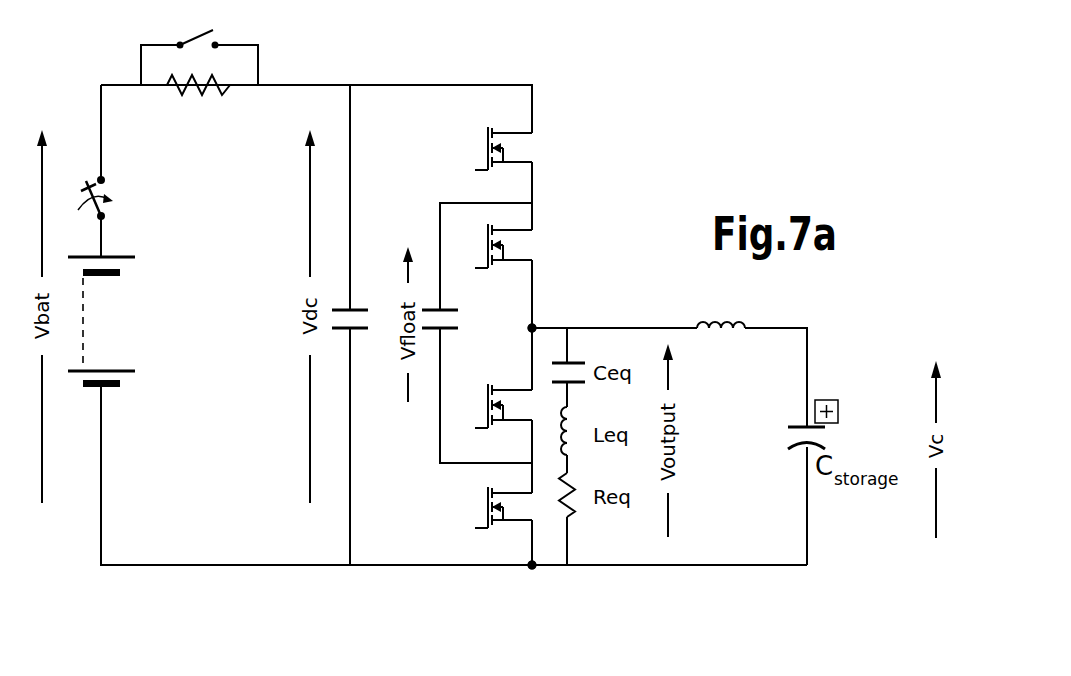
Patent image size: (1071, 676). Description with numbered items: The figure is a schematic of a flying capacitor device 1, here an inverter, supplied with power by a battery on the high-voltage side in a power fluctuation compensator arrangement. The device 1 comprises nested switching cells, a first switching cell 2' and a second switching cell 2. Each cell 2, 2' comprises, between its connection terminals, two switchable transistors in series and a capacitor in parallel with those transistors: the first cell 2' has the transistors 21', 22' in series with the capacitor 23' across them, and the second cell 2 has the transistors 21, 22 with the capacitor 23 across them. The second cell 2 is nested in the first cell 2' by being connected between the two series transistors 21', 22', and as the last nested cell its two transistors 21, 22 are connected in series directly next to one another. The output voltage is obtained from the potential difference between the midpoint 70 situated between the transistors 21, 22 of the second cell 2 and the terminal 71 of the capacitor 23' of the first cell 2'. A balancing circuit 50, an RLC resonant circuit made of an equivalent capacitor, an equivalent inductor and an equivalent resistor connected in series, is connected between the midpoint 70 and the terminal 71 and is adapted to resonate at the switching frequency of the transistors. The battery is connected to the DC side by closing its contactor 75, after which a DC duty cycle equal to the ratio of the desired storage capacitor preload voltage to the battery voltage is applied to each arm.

The flying capacitor device 1 is at (674, 111).
The second switching cell 2 is at (457, 353).
The first switching cell 2' is at (457, 525).
The transistor 21 is at (500, 375).
The transistor 21' is at (495, 549).
The transistor 22 is at (536, 235).
The transistor 22' is at (538, 137).
The capacitor 23 is at (453, 332).
The capacitor 23' is at (304, 340).
The balancing circuit 50 is at (602, 467).
The midpoint 70 is at (532, 328).
The terminal 71 is at (532, 565).
The contactor 75 is at (110, 187).